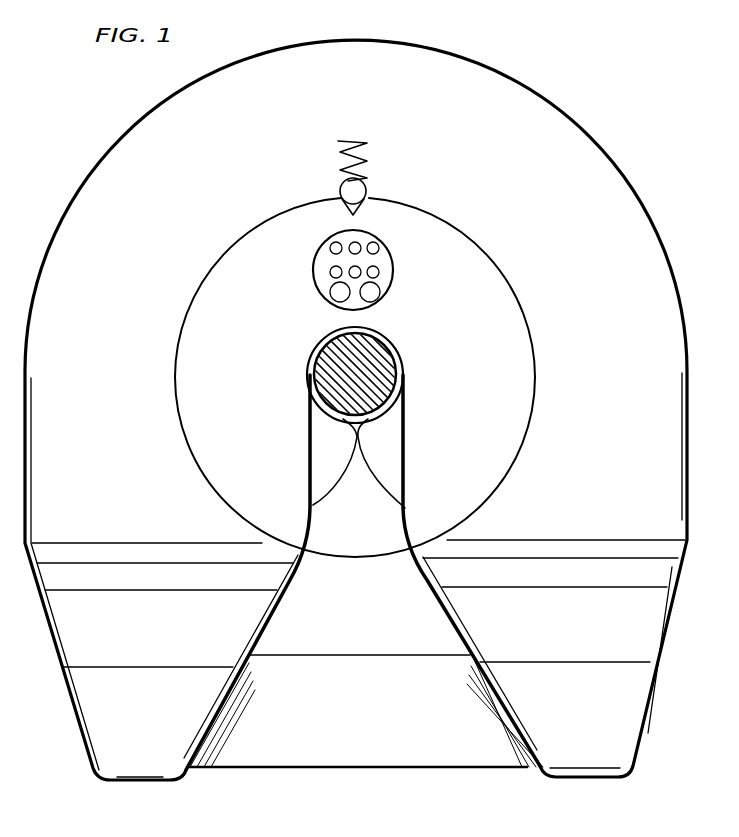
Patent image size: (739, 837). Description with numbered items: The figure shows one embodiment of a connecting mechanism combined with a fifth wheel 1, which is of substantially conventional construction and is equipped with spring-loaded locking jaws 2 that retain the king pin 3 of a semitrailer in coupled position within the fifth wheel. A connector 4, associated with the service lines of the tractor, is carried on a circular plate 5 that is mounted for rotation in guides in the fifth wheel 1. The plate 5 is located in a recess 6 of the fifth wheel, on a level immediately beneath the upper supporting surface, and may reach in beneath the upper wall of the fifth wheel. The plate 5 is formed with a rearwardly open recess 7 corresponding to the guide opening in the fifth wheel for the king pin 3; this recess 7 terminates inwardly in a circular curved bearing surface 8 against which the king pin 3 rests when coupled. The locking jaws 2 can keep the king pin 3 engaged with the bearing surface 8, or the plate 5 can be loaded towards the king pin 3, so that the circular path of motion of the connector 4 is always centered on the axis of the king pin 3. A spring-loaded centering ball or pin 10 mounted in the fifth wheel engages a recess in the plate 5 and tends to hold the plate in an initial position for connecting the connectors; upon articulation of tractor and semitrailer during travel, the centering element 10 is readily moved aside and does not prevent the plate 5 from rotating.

The fifth wheel 1 is at (627, 189).
The spring-loaded locking jaws 2 is at (388, 435).
The king pin 3 is at (337, 355).
The connector 4 is at (386, 263).
The circular plate 5 is at (520, 355).
The recess 6 is at (525, 435).
The rearwardly open recess 7 is at (403, 520).
The circular curved bearing surface 8 is at (397, 355).
The spring-loaded centering ball or pin 10 is at (356, 192).